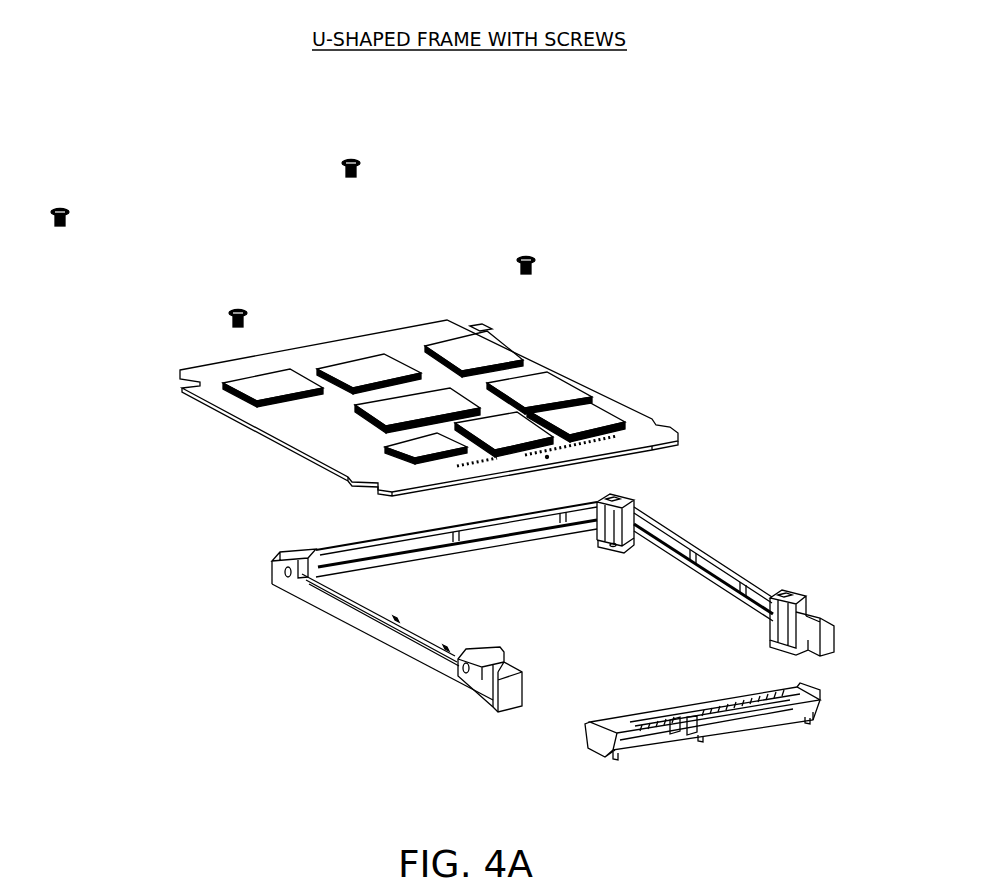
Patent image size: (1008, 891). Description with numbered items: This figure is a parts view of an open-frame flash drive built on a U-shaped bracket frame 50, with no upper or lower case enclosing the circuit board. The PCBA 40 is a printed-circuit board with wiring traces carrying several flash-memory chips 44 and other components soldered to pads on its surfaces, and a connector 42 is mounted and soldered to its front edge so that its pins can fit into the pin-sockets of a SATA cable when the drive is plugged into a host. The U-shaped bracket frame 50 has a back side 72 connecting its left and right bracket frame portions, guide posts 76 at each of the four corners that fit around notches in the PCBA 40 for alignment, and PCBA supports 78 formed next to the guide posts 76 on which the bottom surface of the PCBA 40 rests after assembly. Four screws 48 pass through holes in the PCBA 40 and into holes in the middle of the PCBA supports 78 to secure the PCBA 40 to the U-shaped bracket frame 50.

The PCBA 40 is at (429, 408).
The connector 42 is at (655, 738).
The flash-memory chips 44 is at (474, 354).
The screws 48 is at (66, 207).
The U-shaped bracket frame 50 is at (553, 603).
The back side 72 is at (470, 534).
The guide posts 76 is at (605, 522).
The PCBA supports 78 is at (613, 545).